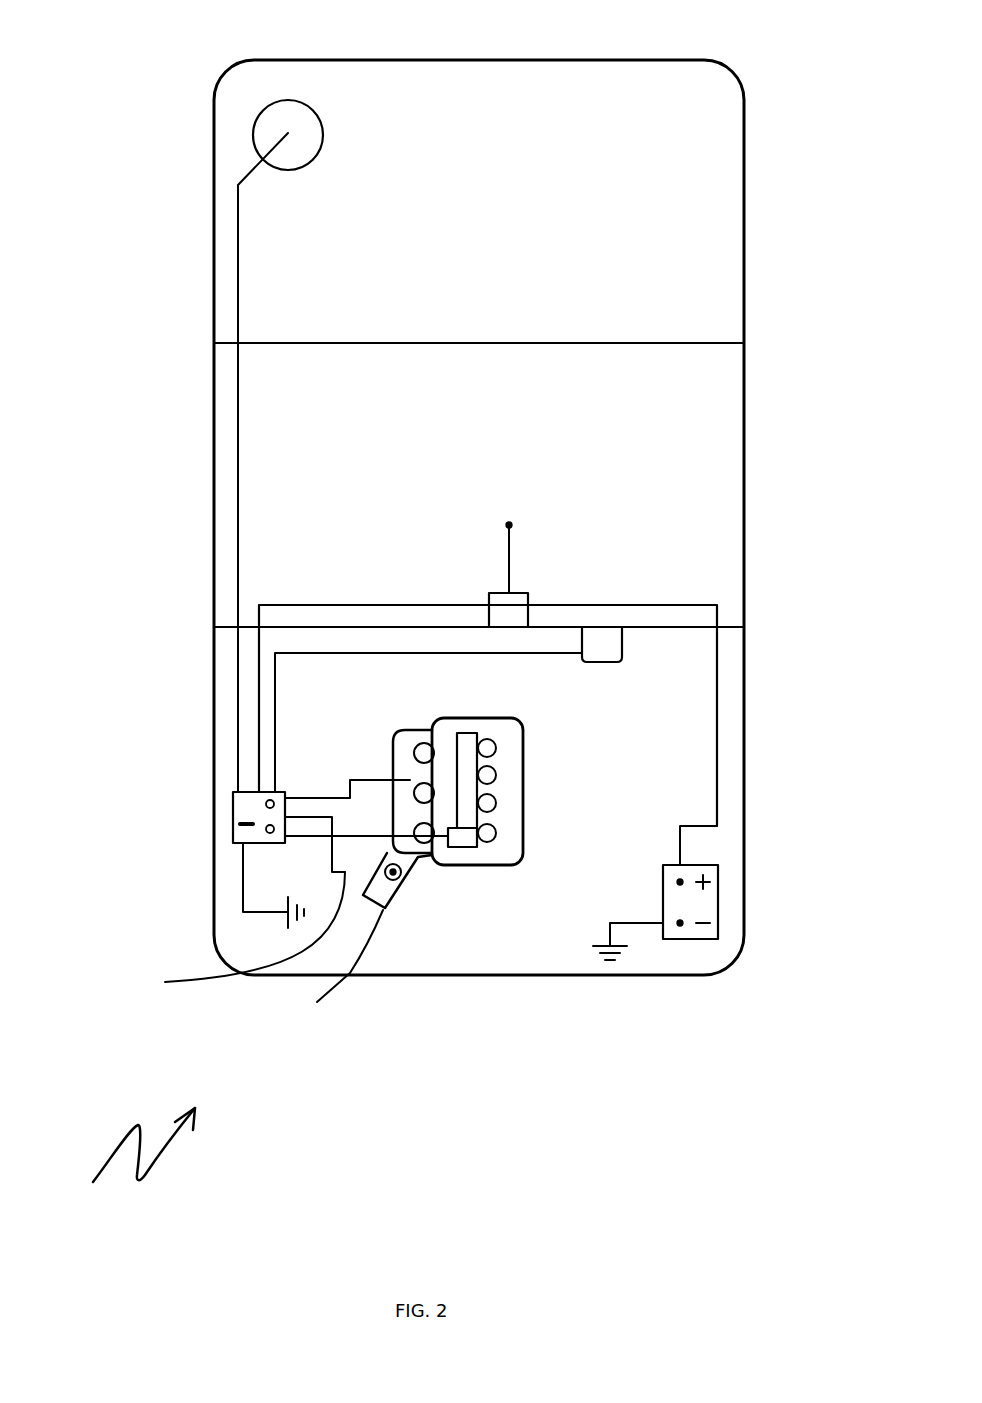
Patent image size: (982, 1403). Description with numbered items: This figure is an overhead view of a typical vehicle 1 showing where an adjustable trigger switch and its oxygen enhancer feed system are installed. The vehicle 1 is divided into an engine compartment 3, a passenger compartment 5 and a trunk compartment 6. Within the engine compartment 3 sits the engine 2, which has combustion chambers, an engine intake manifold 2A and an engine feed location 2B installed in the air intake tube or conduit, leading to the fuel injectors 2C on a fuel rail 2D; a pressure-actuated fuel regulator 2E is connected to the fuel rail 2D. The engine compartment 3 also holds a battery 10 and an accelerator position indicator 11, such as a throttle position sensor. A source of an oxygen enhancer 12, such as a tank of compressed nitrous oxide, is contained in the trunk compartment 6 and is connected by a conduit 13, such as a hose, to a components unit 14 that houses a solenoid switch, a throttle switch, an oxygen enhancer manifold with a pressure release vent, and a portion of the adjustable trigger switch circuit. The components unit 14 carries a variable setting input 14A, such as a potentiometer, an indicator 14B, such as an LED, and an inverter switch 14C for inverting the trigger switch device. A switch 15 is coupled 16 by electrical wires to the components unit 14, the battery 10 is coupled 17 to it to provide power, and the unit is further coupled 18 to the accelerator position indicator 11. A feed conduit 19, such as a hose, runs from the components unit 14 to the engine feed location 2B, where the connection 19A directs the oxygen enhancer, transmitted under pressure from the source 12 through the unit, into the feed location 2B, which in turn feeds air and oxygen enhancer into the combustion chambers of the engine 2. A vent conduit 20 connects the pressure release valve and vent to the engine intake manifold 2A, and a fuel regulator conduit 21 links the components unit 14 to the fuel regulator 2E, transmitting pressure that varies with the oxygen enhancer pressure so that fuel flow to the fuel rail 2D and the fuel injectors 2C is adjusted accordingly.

The vehicle 1 is at (136, 1155).
The engine 2 is at (508, 845).
The engine intake manifold 2A is at (393, 738).
The engine feed location 2B is at (383, 910).
The fuel injectors 2C is at (498, 828).
The fuel rail 2D is at (467, 747).
The fuel regulator 2E is at (460, 838).
The engine compartment 3 is at (552, 932).
The passenger compartment 5 is at (693, 412).
The trunk compartment 6 is at (695, 213).
The battery 10 is at (705, 908).
The accelerator position indicator 11 is at (600, 663).
The source of an oxygen enhancer 12 is at (292, 100).
The conduit 13 is at (237, 275).
The components unit 14 is at (248, 811).
The variable setting input 14A is at (265, 804).
The indicator 14B is at (267, 829).
The inverter switch 14C is at (240, 824).
The switch 15 is at (498, 587).
The coupling 16 is at (308, 603).
The coupling 17 is at (605, 603).
The coupling 18 is at (298, 657).
The feed conduit 19 is at (240, 903).
The connection 19A is at (335, 971).
The vent conduit 20 is at (313, 797).
The fuel regulator conduit 21 is at (298, 842).